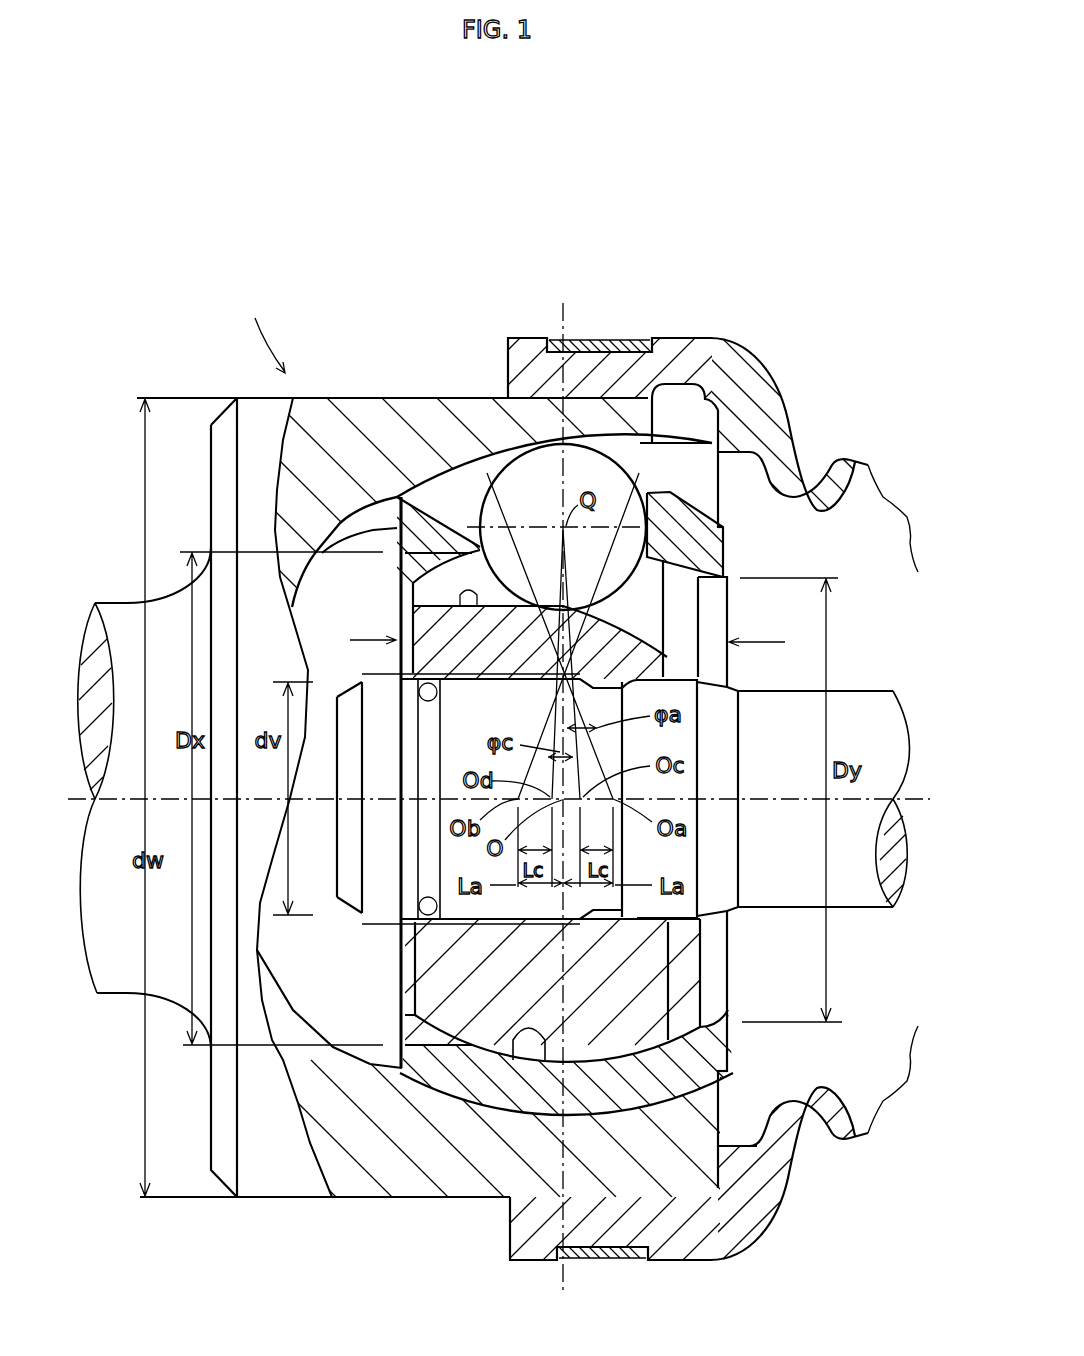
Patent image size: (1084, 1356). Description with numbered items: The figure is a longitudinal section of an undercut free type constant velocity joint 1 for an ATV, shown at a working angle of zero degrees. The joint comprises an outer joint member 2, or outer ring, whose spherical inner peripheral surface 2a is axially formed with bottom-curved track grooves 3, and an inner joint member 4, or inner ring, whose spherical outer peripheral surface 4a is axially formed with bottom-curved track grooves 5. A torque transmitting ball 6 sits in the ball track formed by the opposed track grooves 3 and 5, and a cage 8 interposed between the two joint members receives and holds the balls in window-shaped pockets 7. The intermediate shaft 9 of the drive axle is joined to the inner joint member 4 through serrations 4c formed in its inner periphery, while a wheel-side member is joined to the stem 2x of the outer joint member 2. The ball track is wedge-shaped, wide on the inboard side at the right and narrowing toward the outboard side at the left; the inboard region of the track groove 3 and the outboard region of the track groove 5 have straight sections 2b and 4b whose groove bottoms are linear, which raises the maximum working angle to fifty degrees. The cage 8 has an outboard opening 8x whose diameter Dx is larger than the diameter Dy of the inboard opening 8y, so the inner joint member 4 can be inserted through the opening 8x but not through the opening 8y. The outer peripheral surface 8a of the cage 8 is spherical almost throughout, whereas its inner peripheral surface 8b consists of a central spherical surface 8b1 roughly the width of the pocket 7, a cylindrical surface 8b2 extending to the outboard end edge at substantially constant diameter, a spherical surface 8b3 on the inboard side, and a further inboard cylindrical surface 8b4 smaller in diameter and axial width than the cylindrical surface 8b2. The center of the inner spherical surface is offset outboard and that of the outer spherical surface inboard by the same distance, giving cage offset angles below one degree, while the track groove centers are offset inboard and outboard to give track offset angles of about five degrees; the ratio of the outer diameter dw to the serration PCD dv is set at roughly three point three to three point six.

The constant velocity joint 1 is at (236, 318).
The outer joint member 2 is at (367, 418).
The spherical inner peripheral surface 2a is at (423, 485).
The straight section 2b is at (623, 440).
The stem 2x is at (128, 603).
The track groove 3 is at (495, 451).
The inner joint member 4 is at (437, 975).
The spherical outer peripheral surface 4a is at (732, 1072).
The straight section 4b is at (463, 612).
The serrations 4c is at (438, 920).
The track groove 5 is at (729, 608).
The torque transmitting ball 6 is at (530, 483).
The pocket 7 is at (704, 503).
The cage 8 is at (630, 1092).
The outer peripheral surface 8a is at (470, 1100).
The inner peripheral surface 8b is at (729, 985).
The spherical surface 8b1 is at (511, 1060).
The cylindrical surface 8b2 is at (398, 585).
The spherical surface 8b3 is at (730, 548).
The cylindrical surface 8b4 is at (729, 1018).
The opening 8x is at (357, 642).
The opening 8y is at (769, 651).
The intermediate shaft 9 is at (860, 691).